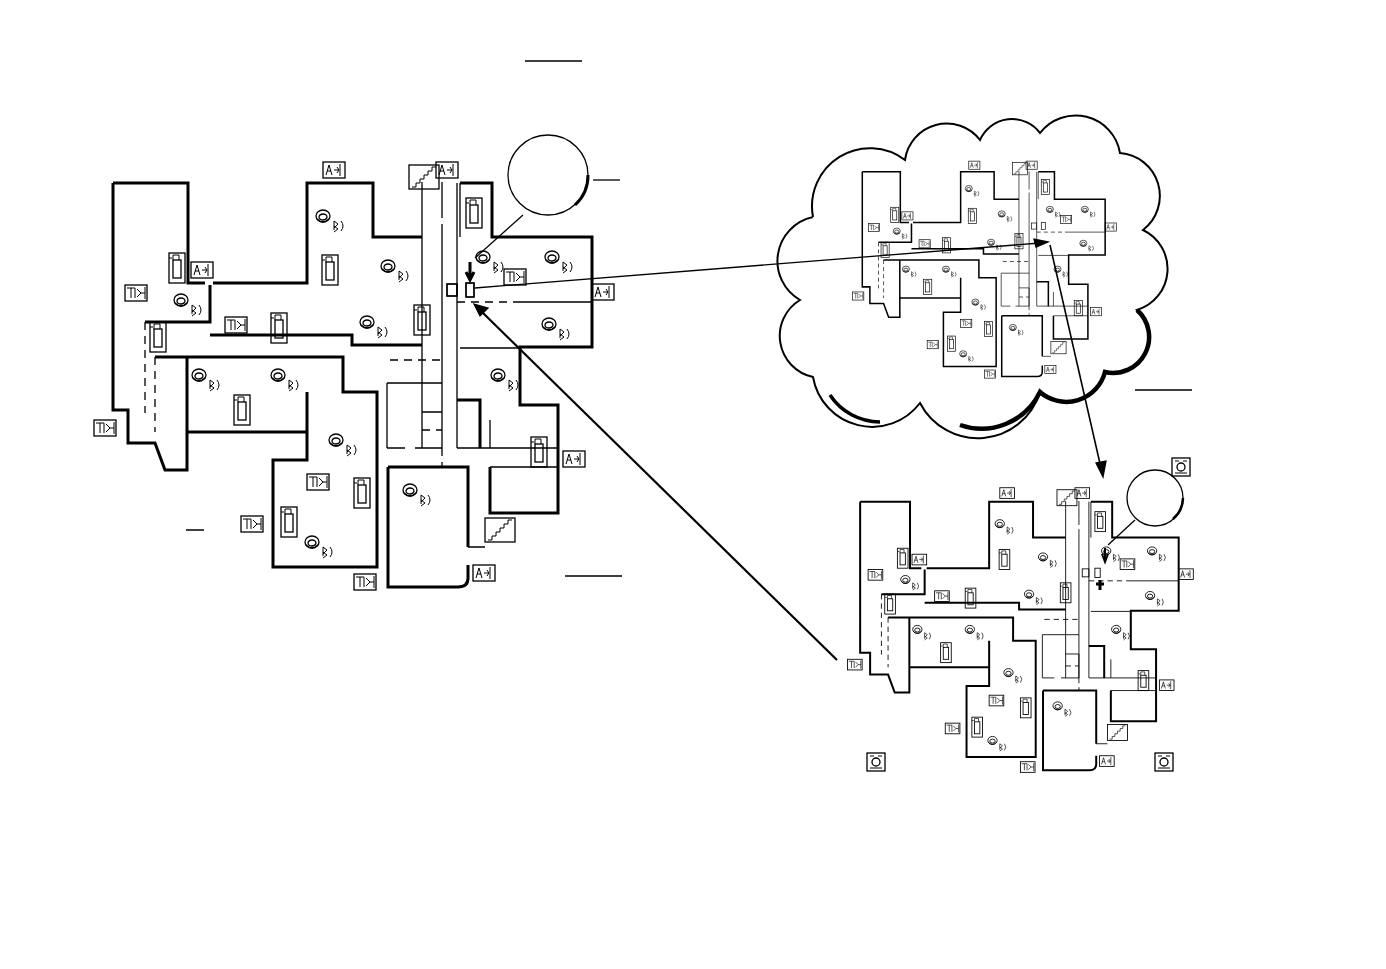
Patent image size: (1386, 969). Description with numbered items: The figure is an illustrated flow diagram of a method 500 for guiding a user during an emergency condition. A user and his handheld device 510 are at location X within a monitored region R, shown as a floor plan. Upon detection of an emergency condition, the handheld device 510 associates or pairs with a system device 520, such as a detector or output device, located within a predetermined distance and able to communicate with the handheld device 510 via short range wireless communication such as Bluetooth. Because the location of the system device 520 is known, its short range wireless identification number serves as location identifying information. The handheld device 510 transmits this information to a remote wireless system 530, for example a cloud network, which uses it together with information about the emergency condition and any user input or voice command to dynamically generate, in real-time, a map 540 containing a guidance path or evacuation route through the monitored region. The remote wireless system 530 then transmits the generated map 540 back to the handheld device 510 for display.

The method 500 is at (1130, 92).
The handheld device 510 is at (476, 292).
The system device 520 is at (446, 289).
The remote wireless system 530 is at (1150, 190).
The map 540 is at (1178, 630).